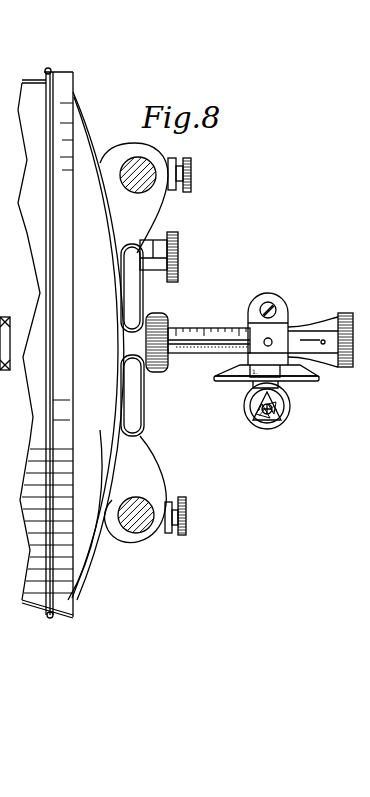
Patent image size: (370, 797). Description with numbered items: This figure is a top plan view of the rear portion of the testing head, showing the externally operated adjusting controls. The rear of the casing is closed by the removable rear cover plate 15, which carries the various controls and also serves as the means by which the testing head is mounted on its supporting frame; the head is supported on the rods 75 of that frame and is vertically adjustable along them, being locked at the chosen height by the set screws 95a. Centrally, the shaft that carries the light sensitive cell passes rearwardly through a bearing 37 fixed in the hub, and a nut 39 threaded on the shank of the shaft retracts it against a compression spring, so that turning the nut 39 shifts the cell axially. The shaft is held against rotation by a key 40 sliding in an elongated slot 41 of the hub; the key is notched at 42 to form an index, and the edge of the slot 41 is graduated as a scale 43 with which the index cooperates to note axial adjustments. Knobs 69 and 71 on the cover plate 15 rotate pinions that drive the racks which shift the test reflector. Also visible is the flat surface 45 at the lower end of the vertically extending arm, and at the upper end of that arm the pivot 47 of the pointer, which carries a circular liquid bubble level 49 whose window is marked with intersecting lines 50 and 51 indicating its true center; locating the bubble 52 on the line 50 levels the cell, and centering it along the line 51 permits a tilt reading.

The rear cover plate 15 is at (87, 537).
The bearing 37 is at (11, 359).
The nut 39 is at (320, 329).
The key 40 is at (213, 347).
The elongated slot 41 is at (173, 363).
The notch 42 is at (216, 351).
The scale 43 is at (185, 338).
The flat surface 45 is at (222, 380).
The pivot 47 is at (258, 386).
The circular liquid bubble level 49 is at (283, 397).
The intersecting line 50 is at (263, 410).
The intersecting line 51 is at (278, 413).
The level bubble 52 is at (270, 415).
The knob 69 is at (163, 254).
The knob 71 is at (166, 318).
The rod 75 is at (133, 165).
The set screw 95a is at (192, 173).